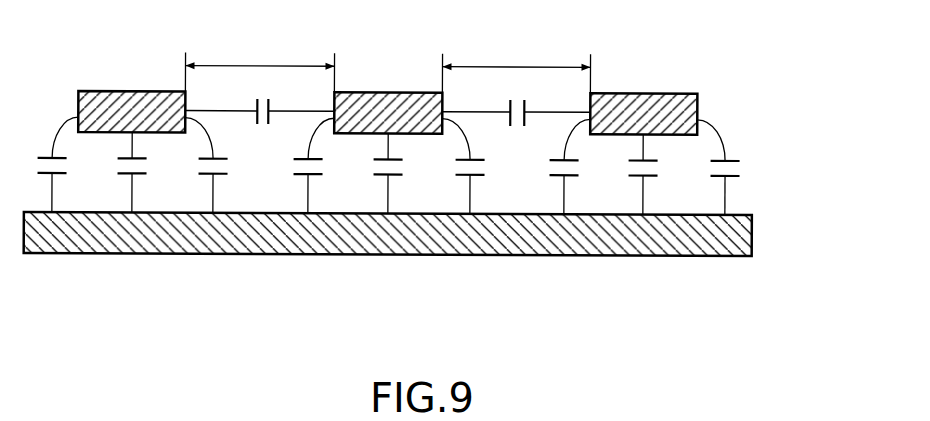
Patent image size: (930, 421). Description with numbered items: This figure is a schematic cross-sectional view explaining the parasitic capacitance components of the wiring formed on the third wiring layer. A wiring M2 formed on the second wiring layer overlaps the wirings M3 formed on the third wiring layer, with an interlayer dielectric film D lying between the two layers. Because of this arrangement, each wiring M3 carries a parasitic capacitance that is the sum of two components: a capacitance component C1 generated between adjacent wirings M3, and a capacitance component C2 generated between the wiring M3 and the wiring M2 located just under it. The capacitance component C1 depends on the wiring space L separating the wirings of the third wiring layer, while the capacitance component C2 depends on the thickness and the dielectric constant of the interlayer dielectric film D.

The wiring formed on the second wiring layer M2 is at (753, 230).
The wirings formed on the third wiring layer M3 is at (697, 104).
The capacitance component C1 is at (526, 107).
The capacitance component C2 is at (650, 174).
The interlayer dielectric film D is at (757, 160).
The wiring space L is at (387, 69).